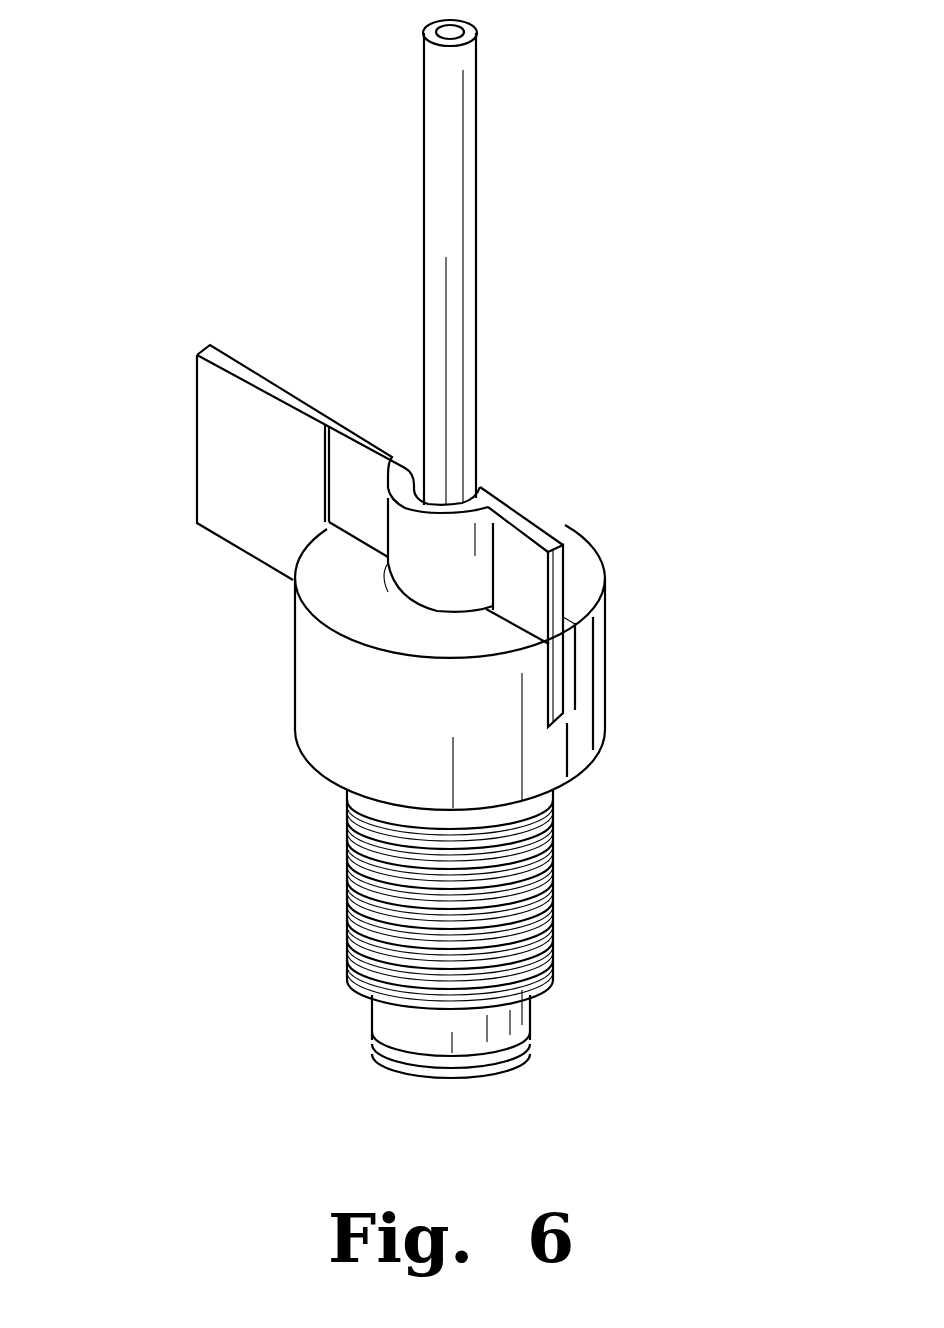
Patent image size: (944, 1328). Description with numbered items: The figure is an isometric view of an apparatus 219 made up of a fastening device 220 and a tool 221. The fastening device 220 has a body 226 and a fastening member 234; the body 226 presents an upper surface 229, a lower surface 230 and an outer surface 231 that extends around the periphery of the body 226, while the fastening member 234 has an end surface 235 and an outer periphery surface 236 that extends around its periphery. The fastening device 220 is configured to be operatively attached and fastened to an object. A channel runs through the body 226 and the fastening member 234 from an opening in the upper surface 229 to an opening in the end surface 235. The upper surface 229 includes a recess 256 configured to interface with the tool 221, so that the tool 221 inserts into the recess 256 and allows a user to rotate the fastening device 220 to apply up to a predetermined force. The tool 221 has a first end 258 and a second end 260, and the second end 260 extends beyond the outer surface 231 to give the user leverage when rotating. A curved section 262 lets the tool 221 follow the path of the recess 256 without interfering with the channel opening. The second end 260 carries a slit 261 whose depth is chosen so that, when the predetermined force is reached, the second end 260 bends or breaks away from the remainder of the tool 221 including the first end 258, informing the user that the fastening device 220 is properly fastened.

The apparatus 219 is at (205, 163).
The fastening device 220 is at (692, 656).
The tool 221 is at (161, 409).
The body 226 is at (606, 552).
The upper surface 229 is at (538, 506).
The lower surface 230 is at (575, 770).
The outer surface 231 is at (310, 692).
The fastening member 234 is at (580, 909).
The end surface 235 is at (372, 1052).
The outer periphery surface 236 is at (352, 935).
The recess 256 is at (577, 691).
The first end 258 is at (563, 534).
The second end 260 is at (258, 371).
The slit 261 is at (325, 466).
The curved section 262 is at (431, 523).